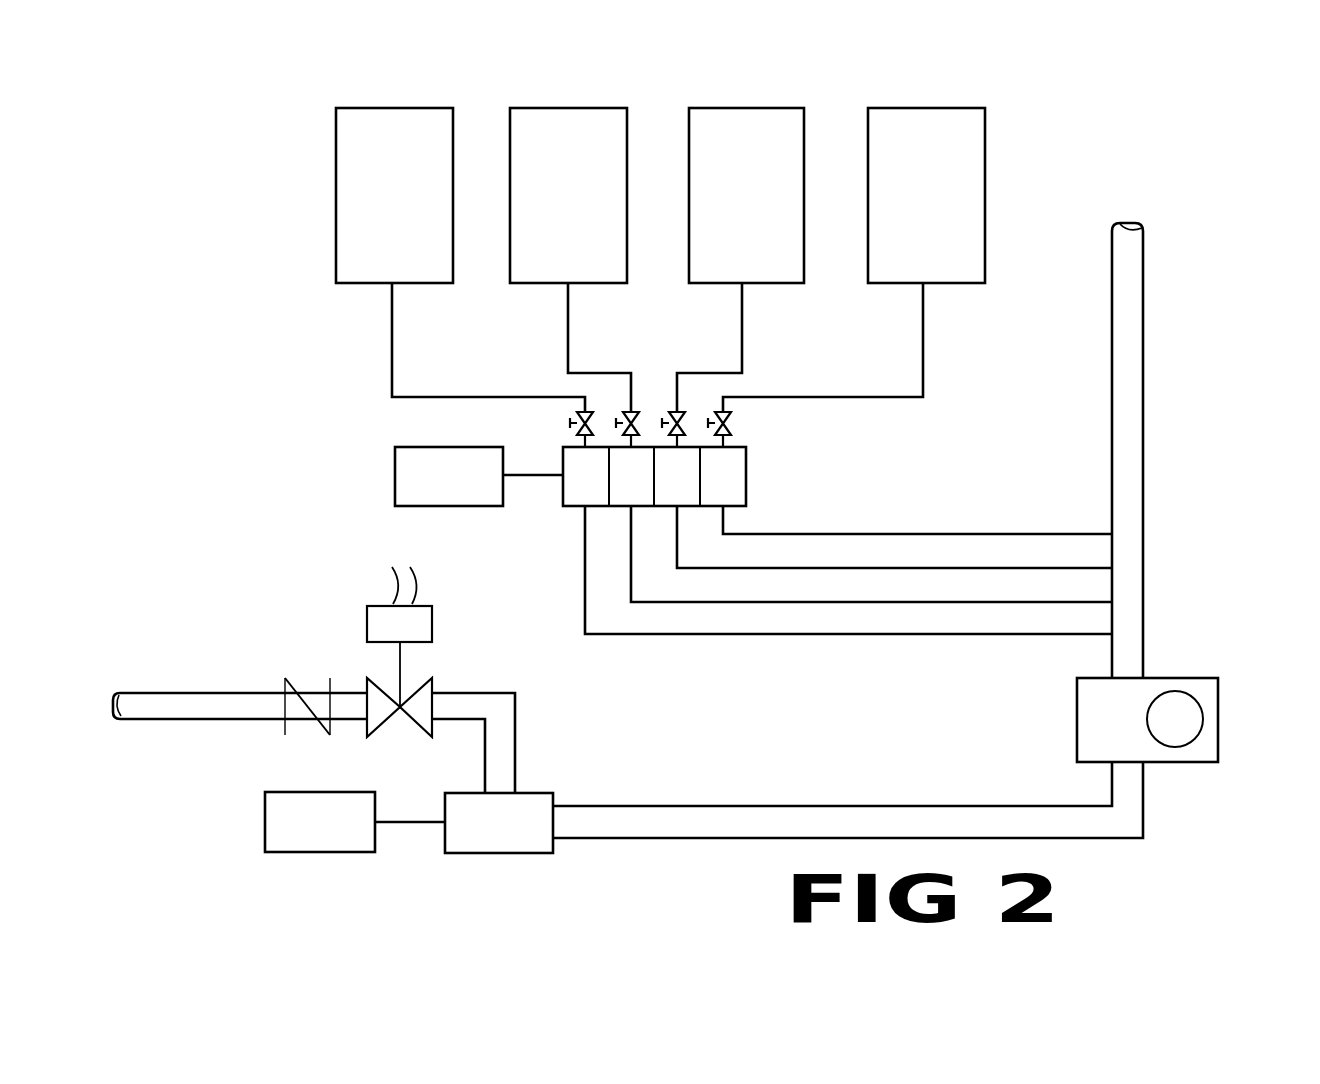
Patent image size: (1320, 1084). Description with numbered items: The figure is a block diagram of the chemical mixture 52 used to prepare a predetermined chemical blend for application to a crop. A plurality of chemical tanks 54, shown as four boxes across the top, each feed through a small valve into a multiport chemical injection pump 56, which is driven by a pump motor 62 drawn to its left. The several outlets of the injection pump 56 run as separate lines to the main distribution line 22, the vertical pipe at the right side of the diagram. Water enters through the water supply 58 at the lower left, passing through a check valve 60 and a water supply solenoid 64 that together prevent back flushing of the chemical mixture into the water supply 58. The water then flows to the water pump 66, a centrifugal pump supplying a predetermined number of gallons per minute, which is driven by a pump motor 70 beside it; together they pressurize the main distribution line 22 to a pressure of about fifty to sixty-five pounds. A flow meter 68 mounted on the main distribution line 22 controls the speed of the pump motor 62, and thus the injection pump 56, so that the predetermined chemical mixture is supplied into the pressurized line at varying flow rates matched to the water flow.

The main distribution line 22 is at (1145, 243).
The chemical mixture 52 is at (1091, 146).
The chemical tanks 54 is at (362, 198).
The multiport chemical injection pump 56 is at (746, 482).
The water supply 58 is at (140, 693).
The check valve 60 is at (287, 678).
The pump motor 62 is at (398, 477).
The water supply solenoid 64 is at (438, 626).
The water pump 66 is at (533, 793).
The flow meter 68 is at (1188, 678).
The pump motor 70 is at (265, 813).